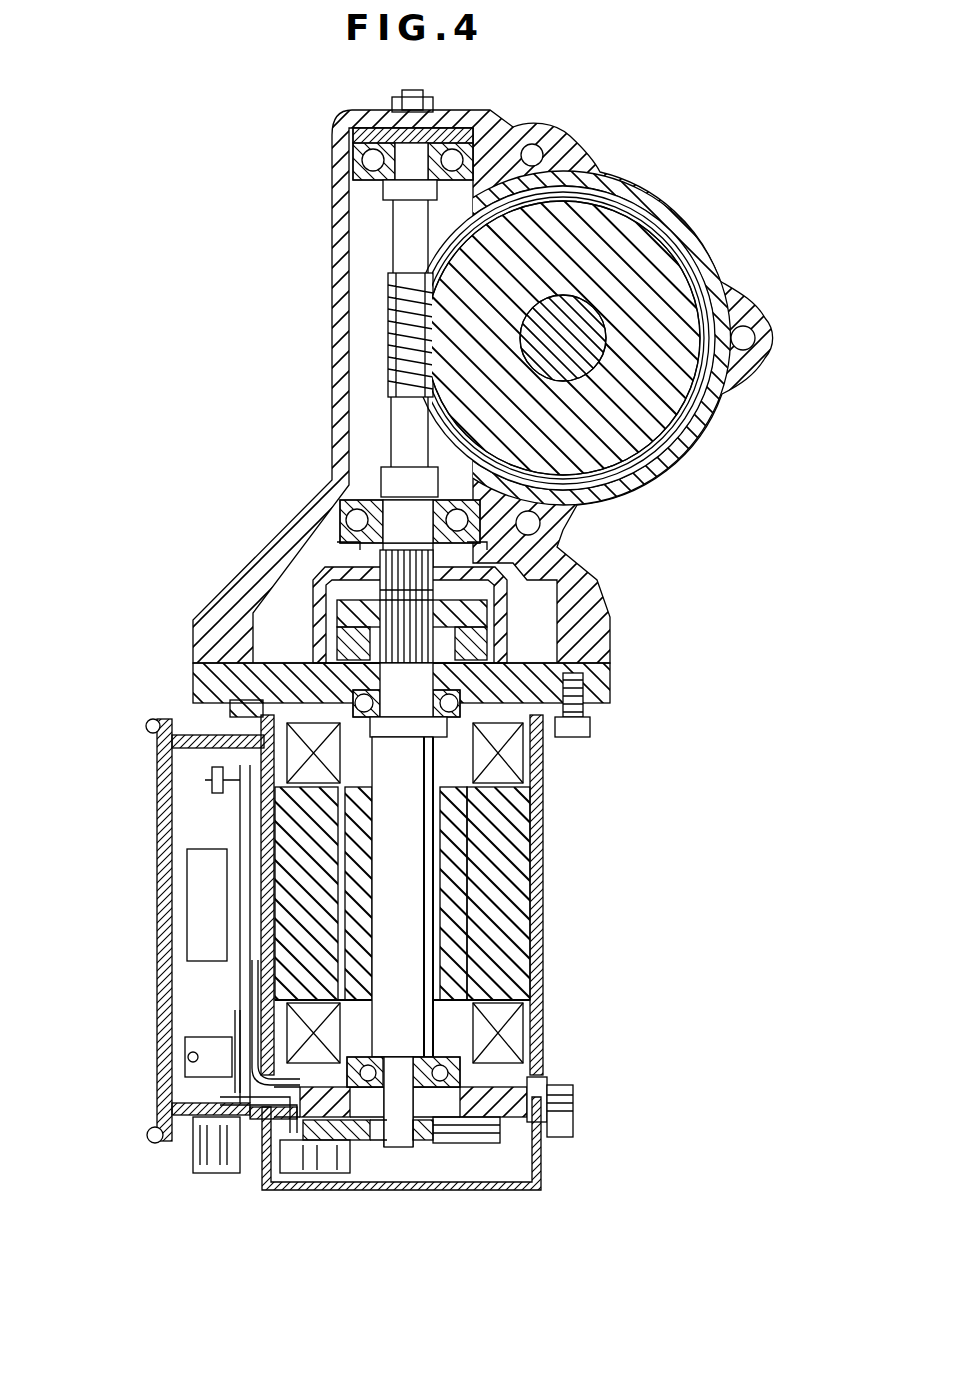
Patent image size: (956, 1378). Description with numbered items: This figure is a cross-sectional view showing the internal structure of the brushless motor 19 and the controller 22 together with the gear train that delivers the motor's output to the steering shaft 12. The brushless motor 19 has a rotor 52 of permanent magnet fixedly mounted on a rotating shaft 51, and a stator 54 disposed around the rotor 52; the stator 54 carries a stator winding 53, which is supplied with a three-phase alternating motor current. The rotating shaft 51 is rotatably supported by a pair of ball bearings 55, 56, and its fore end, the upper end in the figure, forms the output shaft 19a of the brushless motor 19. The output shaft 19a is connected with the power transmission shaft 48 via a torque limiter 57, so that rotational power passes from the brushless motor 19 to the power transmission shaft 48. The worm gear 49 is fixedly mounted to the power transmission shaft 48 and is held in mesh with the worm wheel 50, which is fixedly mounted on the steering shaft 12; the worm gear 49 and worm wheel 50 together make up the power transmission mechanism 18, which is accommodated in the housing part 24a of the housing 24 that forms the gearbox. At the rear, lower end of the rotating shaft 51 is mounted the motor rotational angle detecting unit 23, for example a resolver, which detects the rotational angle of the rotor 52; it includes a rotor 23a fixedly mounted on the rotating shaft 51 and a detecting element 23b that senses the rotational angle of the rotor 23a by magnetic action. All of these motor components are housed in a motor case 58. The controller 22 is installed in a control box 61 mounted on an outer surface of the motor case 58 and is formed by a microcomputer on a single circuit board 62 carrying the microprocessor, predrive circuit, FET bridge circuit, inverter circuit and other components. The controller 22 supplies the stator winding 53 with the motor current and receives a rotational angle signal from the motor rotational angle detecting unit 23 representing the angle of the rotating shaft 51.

The steering shaft 12 is at (620, 407).
The power transmission mechanism 18 is at (383, 323).
The brushless motor 19 is at (406, 931).
The output shaft 19a is at (543, 757).
The controller 22 is at (208, 842).
The motor rotational angle detecting unit 23 is at (411, 1202).
The rotor 23a is at (437, 1162).
The detecting element 23b is at (457, 1157).
The housing 24 is at (717, 247).
The housing part 24a is at (633, 200).
The power transmission shaft 48 is at (400, 437).
The worm gear 49 is at (393, 290).
The worm wheel 50 is at (577, 350).
The rotating shaft 51 is at (543, 910).
The rotor 52 is at (543, 873).
The stator winding 53 is at (547, 767).
The stator 54 is at (543, 947).
The ball bearing 55 is at (232, 688).
The ball bearing 56 is at (540, 1060).
The torque limiter 57 is at (290, 628).
The motor case 58 is at (537, 1013).
The control box 61 is at (152, 894).
The circuit board 62 is at (237, 993).